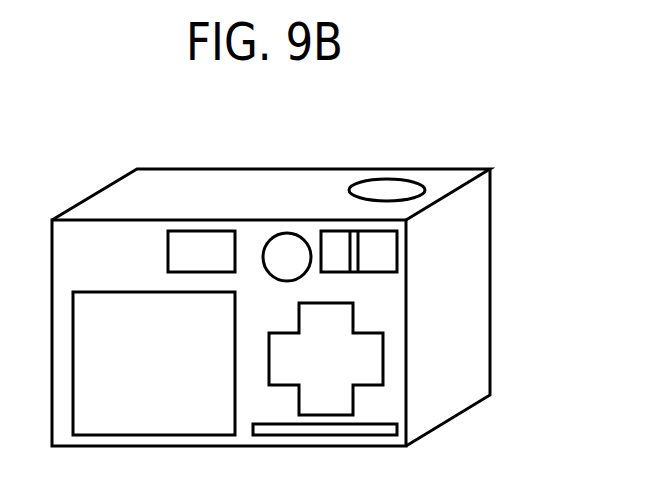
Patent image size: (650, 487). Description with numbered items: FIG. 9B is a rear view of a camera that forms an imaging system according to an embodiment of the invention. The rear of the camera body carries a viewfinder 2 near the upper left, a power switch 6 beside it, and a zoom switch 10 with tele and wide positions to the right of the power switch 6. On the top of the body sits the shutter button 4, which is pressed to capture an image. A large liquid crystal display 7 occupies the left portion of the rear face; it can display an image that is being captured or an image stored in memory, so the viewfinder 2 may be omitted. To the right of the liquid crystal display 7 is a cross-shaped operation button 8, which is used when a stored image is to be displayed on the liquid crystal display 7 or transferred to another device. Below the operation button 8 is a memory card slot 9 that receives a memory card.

The viewfinder 2 is at (171, 258).
The shutter button 4 is at (399, 188).
The power switch 6 is at (285, 240).
The liquid crystal display 7 is at (125, 298).
The operation button 8 is at (370, 363).
The memory card slot 9 is at (397, 429).
The zoom switch 10 is at (390, 254).